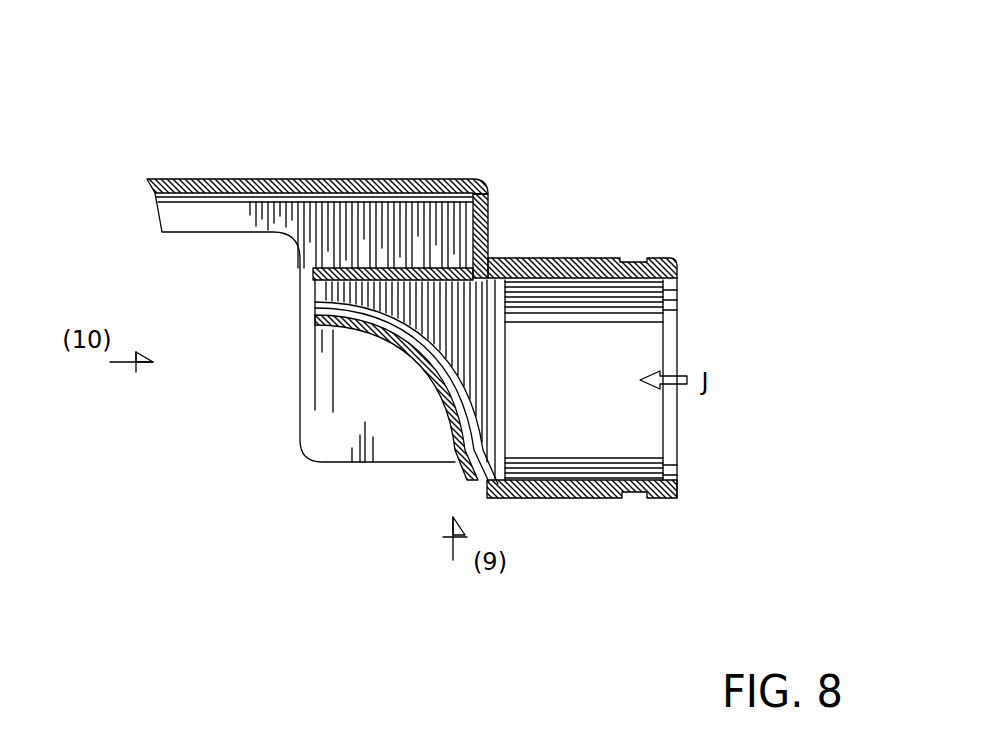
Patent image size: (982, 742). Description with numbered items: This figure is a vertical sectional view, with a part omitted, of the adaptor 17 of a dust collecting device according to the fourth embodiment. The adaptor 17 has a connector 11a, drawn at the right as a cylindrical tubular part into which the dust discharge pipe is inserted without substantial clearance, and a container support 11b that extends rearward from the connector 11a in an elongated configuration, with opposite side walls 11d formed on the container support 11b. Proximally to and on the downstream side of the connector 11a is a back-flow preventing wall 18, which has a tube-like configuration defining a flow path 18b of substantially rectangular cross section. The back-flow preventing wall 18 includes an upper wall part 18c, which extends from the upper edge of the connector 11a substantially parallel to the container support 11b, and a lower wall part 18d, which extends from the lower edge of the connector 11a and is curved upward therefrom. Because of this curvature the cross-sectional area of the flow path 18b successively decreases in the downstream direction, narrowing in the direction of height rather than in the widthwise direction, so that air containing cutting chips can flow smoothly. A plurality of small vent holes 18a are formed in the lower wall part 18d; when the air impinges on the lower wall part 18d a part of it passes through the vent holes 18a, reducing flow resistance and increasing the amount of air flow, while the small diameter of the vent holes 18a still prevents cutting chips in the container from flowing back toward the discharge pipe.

The connector 11a is at (562, 500).
The container support 11b is at (230, 180).
The side wall 11d is at (332, 440).
The adaptor 17 is at (533, 232).
The back-flow preventing wall 18 is at (490, 375).
The vent hole 18a is at (443, 452).
The flow path 18b is at (327, 291).
The upper wall part 18c is at (383, 268).
The lower wall part 18d is at (462, 468).